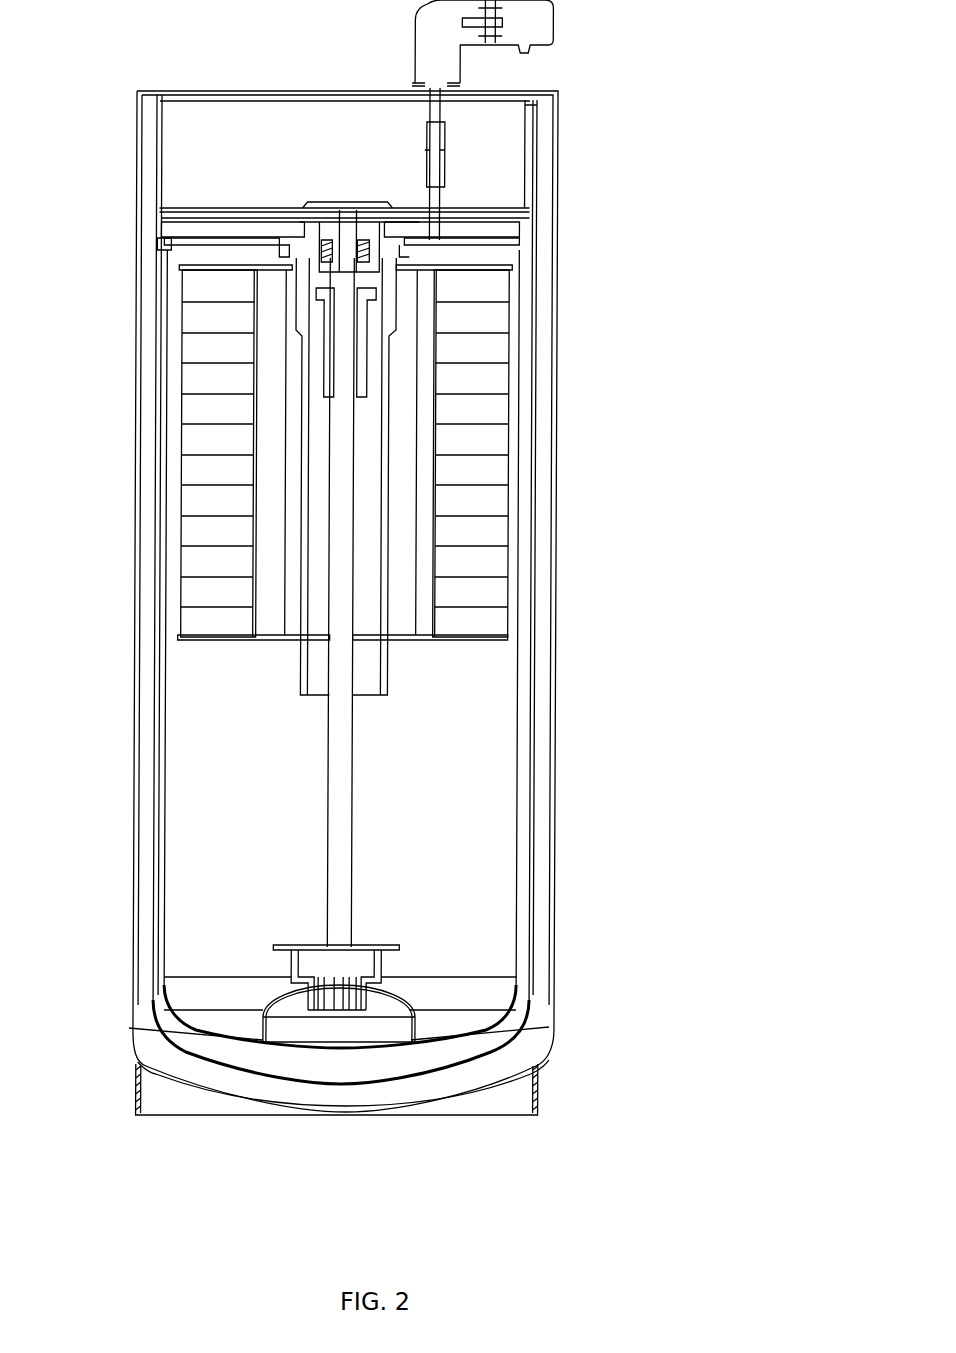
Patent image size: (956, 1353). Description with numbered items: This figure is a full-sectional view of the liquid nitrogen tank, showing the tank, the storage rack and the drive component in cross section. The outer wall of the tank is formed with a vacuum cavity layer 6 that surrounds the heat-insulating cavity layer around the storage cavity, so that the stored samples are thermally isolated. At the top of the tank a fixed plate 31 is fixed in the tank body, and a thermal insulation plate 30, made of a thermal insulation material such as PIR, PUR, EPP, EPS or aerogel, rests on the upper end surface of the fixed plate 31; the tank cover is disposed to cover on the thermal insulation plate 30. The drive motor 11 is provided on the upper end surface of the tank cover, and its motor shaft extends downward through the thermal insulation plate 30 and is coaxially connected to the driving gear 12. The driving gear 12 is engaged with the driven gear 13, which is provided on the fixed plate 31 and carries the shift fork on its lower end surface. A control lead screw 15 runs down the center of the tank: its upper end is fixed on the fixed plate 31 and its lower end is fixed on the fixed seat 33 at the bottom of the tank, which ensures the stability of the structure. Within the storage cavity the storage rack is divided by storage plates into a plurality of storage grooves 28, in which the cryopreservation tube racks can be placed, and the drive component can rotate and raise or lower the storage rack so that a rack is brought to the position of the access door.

The vacuum cavity layer 6 is at (537, 590).
The drive motor 11 is at (523, 27).
The driving gear 12 is at (460, 250).
The driven gear 13 is at (275, 250).
The control lead screw 15 is at (345, 410).
The storage groove 28 is at (495, 470).
The thermal insulation plate 30 is at (515, 150).
The fixed plate 31 is at (535, 218).
The fixed seat 33 is at (395, 1030).